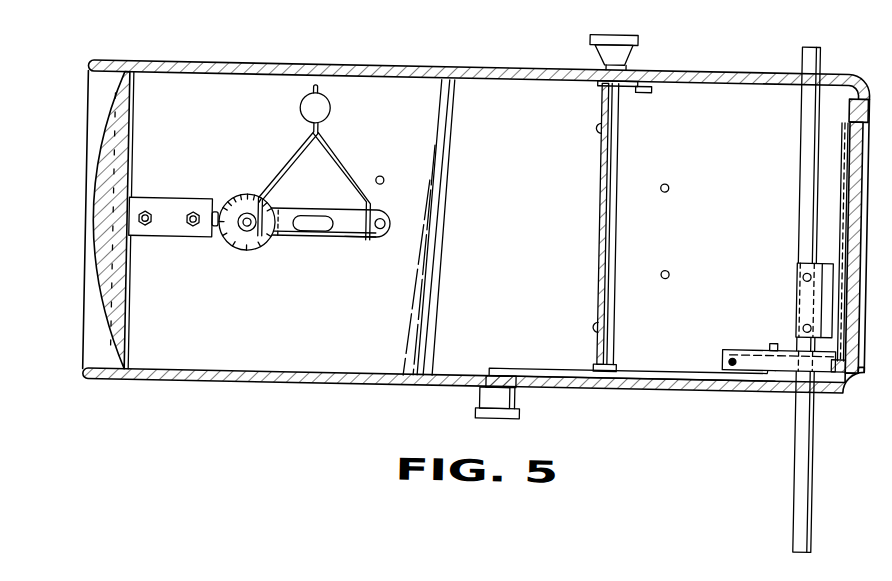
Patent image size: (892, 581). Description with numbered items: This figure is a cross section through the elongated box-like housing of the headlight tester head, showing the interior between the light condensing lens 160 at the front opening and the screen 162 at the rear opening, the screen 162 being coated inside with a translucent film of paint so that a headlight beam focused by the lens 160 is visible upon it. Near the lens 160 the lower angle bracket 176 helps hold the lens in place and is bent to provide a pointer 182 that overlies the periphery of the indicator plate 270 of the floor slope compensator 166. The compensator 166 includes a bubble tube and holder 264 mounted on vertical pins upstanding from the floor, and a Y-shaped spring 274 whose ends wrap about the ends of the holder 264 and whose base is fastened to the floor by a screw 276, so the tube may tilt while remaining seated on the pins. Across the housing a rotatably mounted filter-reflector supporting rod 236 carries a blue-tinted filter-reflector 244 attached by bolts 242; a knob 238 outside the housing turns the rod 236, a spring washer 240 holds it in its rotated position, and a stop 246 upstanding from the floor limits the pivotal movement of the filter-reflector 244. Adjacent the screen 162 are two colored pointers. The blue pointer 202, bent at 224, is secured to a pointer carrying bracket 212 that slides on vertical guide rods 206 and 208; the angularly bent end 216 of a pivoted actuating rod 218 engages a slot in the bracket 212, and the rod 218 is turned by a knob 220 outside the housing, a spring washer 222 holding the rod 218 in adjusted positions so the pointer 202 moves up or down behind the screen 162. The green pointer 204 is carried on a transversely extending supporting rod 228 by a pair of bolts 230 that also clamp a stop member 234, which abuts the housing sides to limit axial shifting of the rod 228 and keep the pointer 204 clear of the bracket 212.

The light condensing lens 160 is at (118, 286).
The screen 162 is at (853, 128).
The floor slope compensator 166 is at (368, 245).
The lower angle bracket 176 is at (176, 242).
The pointer 182 is at (216, 219).
The pointer 202 is at (839, 170).
The pointer 204 is at (804, 271).
The guide rod 206 is at (727, 356).
The guide rod 208 is at (776, 369).
The pointer carrying bracket 212 is at (739, 344).
The angularly bent end 216 is at (773, 338).
The actuating rod 218 is at (657, 370).
The knob 220 is at (527, 416).
The spring washer 222 is at (490, 383).
The angular bend 224 is at (836, 368).
The supporting rod 228 is at (800, 478).
The bolt 230 is at (805, 320).
The stop member 234 is at (798, 257).
The filter-reflector supporting rod 236 is at (609, 173).
The knob 238 is at (634, 38).
The spring washer 240 is at (630, 72).
The bolt 242 is at (594, 126).
The filter-reflector 244 is at (600, 235).
The stop 246 is at (647, 86).
The bubble tube and holder 264 is at (338, 236).
The indicator plate 270 is at (244, 202).
The Y-shaped spring 274 is at (349, 177).
The screw 276 is at (302, 116).